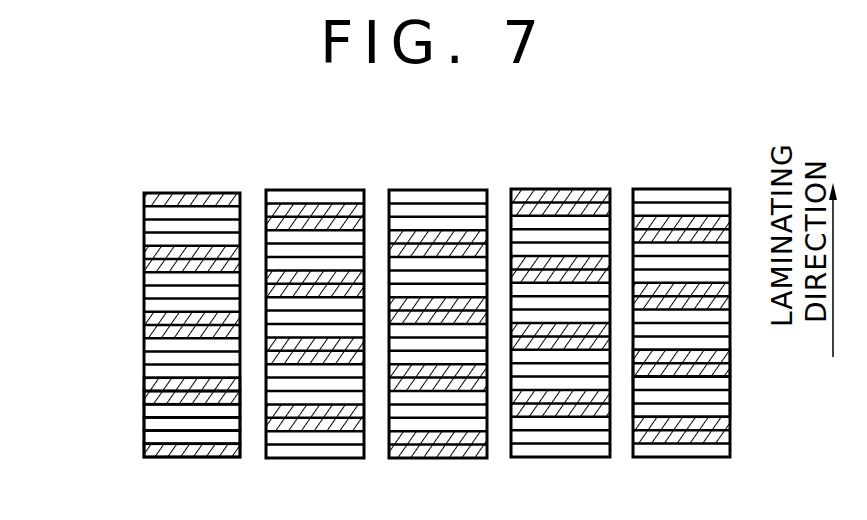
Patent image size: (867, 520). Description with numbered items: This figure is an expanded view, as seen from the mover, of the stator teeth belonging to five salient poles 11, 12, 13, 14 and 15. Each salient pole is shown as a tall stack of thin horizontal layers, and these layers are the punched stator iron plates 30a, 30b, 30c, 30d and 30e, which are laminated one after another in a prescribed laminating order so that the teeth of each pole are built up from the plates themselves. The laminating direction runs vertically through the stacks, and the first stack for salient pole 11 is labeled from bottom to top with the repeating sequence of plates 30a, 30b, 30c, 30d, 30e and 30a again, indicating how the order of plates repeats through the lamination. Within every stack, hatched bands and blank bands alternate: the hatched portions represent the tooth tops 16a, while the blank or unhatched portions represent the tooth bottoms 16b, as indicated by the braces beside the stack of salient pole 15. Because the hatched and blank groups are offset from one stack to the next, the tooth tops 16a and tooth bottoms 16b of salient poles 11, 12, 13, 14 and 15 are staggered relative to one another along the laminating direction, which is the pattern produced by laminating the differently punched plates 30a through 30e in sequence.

The salient pole 11 is at (192, 193).
The salient pole 12 is at (320, 190).
The salient pole 13 is at (437, 190).
The salient pole 14 is at (563, 189).
The salient pole 15 is at (680, 189).
The tooth top 16a is at (735, 349).
The tooth bottom 16b is at (735, 378).
The stator iron plate 30a is at (145, 382).
The stator iron plate 30b is at (145, 437).
The stator iron plate 30c is at (145, 424).
The stator iron plate 30d is at (145, 411).
The stator iron plate 30e is at (145, 396).